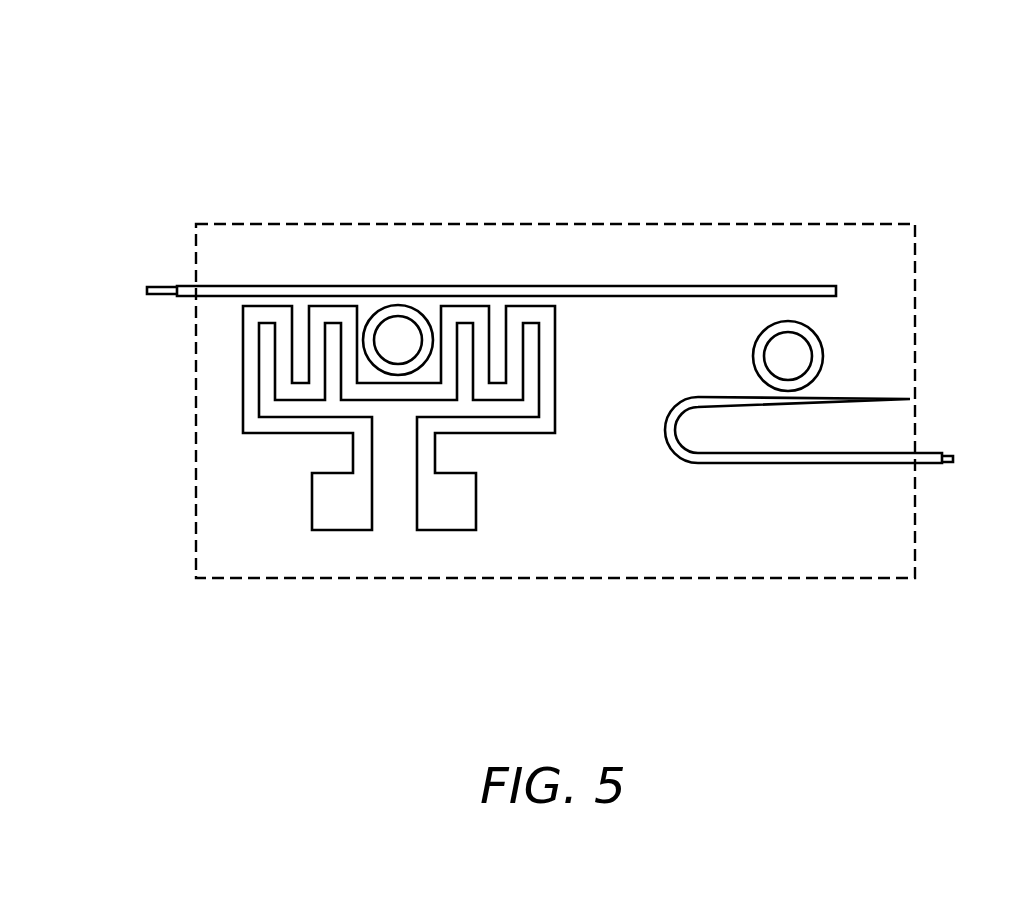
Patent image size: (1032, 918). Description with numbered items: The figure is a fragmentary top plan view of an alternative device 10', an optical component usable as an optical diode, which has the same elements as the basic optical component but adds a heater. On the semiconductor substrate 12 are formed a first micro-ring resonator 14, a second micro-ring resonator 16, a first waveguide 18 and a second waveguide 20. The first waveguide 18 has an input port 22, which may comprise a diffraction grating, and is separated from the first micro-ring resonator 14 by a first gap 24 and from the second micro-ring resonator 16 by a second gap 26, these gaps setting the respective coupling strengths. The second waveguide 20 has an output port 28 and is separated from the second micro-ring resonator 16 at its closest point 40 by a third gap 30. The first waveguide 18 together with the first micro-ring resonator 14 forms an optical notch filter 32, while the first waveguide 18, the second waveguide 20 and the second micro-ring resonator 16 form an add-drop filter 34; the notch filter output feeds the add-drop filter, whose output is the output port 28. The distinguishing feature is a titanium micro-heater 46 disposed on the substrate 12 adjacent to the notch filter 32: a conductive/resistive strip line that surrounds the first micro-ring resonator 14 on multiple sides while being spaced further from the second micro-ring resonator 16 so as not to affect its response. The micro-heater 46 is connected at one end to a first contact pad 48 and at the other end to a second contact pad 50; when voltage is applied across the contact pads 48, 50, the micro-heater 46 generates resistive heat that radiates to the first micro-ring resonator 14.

The alternative device 10' is at (878, 78).
The semiconductor substrate 12 is at (850, 224).
The first micro-ring resonator 14 is at (421, 312).
The second micro-ring resonator 16 is at (822, 340).
The first waveguide 18 is at (686, 285).
The second waveguide 20 is at (788, 465).
The input port 22 is at (190, 285).
The first gap 24 is at (390, 303).
The second gap 26 is at (800, 308).
The output port 28 is at (950, 456).
The third gap 30 is at (802, 395).
The optical notch filter 32 is at (408, 242).
The add-drop filter 34 is at (685, 339).
The closest point 40 is at (787, 408).
The titanium micro-heater 46 is at (242, 383).
The first contact pad 48 is at (342, 532).
The second contact pad 50 is at (442, 532).